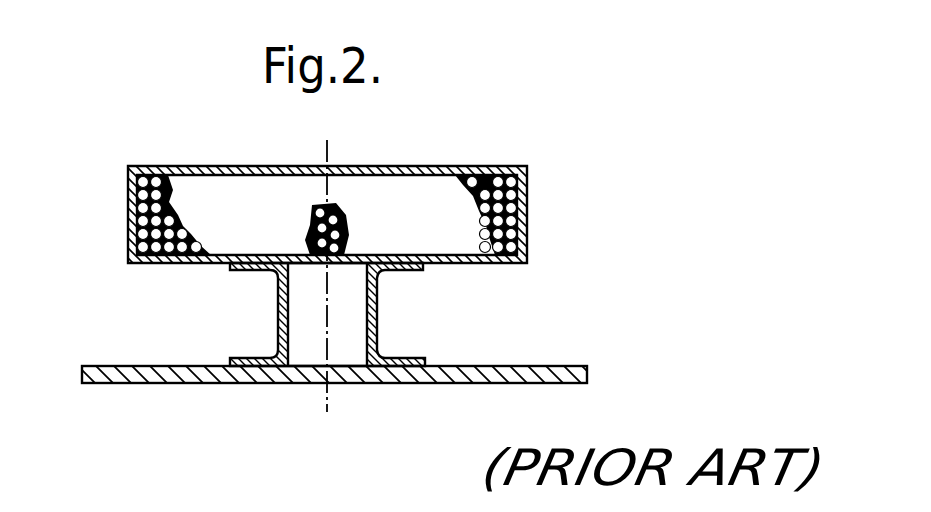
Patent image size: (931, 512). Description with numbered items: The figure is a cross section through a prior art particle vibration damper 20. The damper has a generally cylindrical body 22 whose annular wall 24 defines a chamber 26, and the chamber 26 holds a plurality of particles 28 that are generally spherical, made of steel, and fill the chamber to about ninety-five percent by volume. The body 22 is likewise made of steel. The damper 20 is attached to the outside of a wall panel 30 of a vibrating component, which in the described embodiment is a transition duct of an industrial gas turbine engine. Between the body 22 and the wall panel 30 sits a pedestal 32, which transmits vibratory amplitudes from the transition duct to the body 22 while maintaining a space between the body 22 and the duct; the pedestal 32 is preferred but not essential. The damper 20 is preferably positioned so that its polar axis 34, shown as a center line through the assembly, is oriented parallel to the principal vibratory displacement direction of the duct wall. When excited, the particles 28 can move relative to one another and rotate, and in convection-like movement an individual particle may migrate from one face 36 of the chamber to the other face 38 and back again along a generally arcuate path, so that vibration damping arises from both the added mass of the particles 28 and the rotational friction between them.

The particle vibration damper 20 is at (330, 201).
The body 22 is at (321, 201).
The annular wall 24 is at (528, 183).
The chamber 26 is at (423, 190).
The particles 28 is at (312, 218).
The wall panel 30 is at (537, 366).
The pedestal 32 is at (367, 296).
The polar axis 34 is at (330, 398).
The first face 36 is at (375, 165).
The other face 38 is at (158, 265).